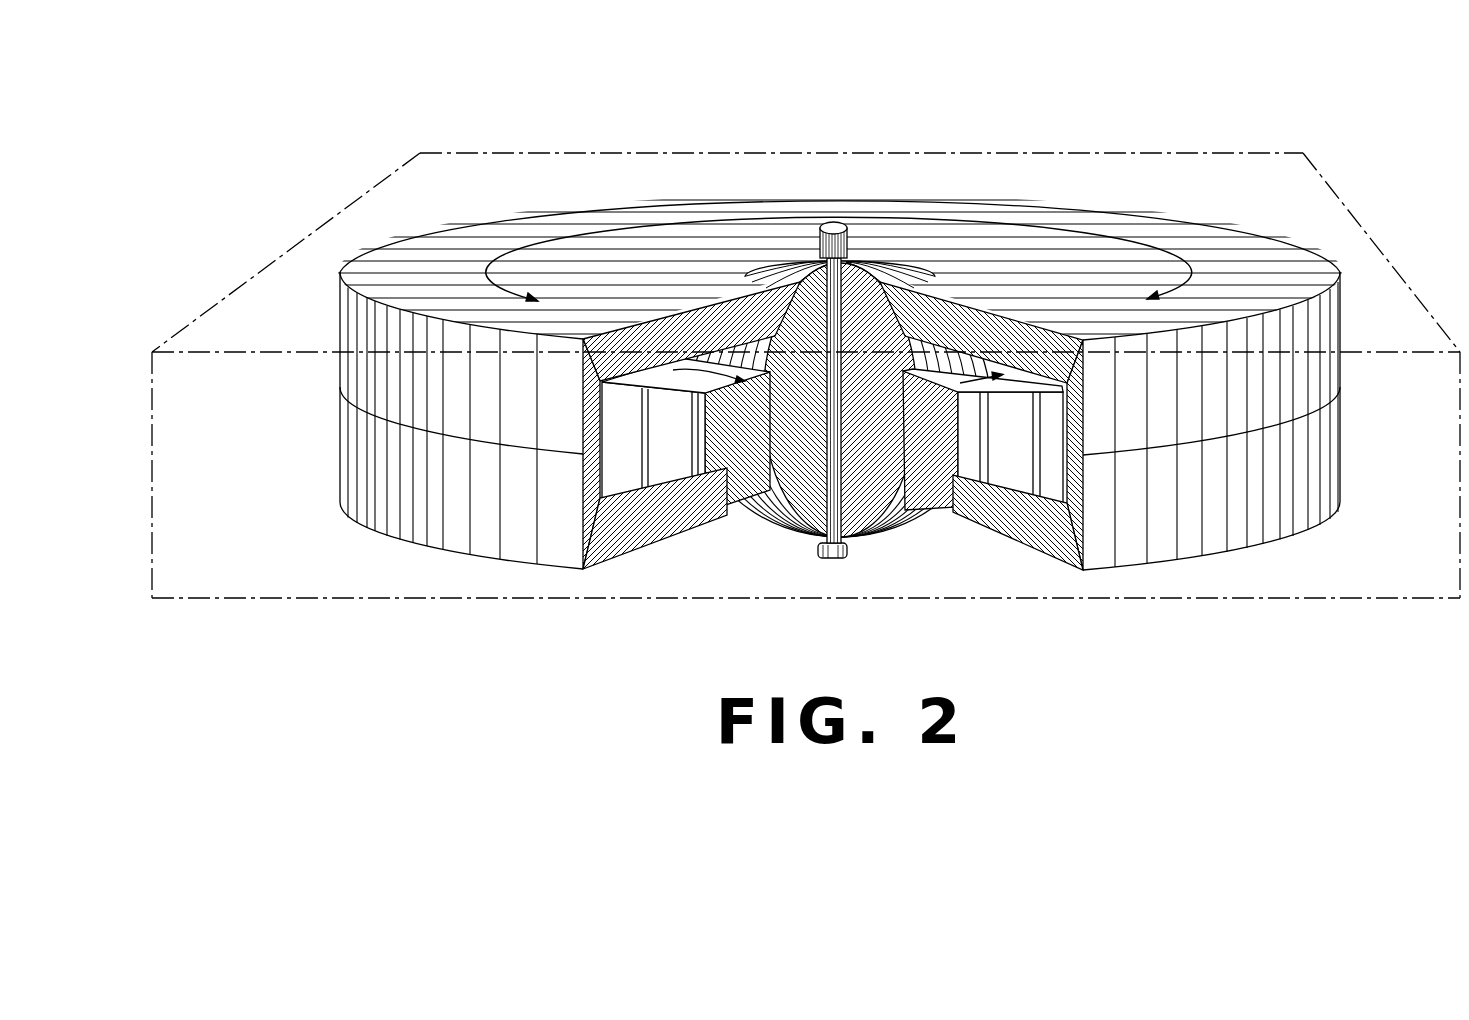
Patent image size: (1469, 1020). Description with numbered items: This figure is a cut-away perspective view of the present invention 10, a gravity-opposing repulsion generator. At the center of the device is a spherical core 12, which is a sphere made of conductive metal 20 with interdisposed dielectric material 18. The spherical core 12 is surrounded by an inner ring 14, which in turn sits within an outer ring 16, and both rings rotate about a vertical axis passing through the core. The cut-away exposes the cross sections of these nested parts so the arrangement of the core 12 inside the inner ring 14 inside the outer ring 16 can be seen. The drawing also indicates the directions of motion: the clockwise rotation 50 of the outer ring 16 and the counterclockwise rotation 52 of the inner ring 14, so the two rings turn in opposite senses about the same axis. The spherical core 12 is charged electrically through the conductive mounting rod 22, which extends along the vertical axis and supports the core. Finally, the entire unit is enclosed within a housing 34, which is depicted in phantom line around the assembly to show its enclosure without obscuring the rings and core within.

The present invention 10 is at (1092, 128).
The spherical core 12 is at (862, 345).
The inner ring 14 is at (786, 537).
The outer ring 16 is at (1213, 527).
The dielectric material 18 is at (766, 311).
The conductive metal 20 is at (878, 330).
The conductive mounting rod 22 is at (833, 223).
The housing 34 is at (440, 596).
The clockwise rotation 50 is at (1087, 237).
The counterclockwise rotation 52 is at (957, 390).